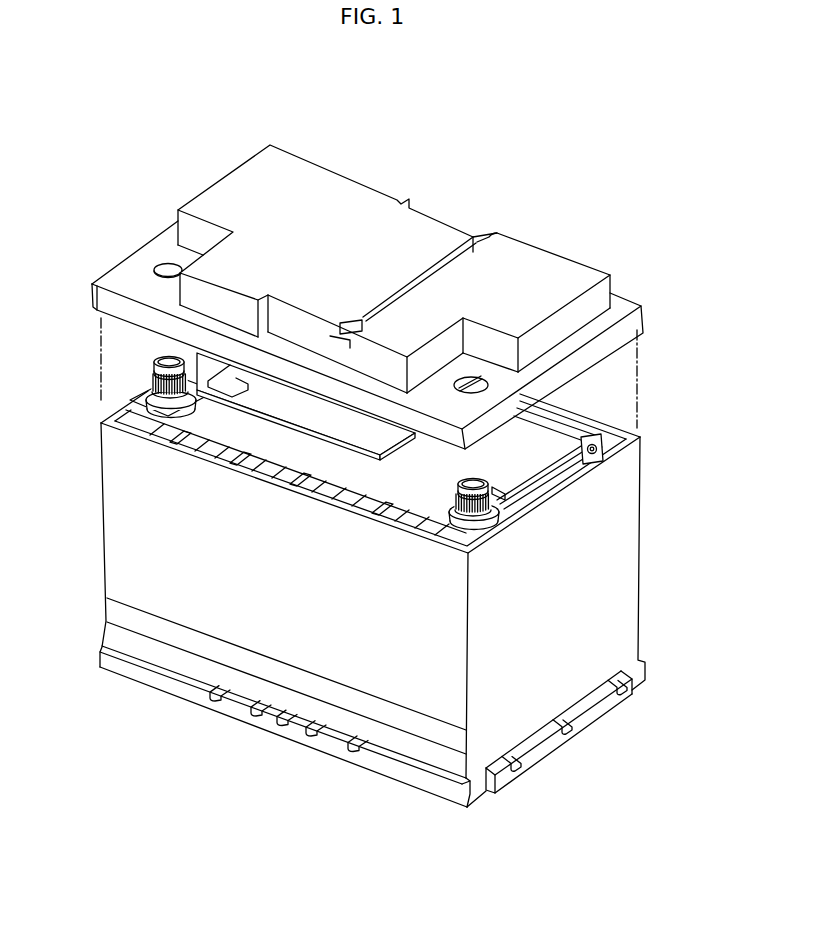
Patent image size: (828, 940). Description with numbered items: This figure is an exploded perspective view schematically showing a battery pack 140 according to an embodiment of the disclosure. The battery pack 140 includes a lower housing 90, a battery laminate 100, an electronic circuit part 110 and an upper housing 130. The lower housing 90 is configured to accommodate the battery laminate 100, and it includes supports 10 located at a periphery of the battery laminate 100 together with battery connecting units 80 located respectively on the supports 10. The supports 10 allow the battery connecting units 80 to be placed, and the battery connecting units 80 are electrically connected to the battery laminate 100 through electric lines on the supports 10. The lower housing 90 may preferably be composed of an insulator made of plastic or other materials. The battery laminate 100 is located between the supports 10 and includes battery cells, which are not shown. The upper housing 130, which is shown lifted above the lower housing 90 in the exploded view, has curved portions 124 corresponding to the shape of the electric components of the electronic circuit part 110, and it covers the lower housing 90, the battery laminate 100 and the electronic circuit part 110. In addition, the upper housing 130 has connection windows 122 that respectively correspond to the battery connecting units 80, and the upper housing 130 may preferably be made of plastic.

The battery pack 140 is at (221, 87).
The supports 10 is at (128, 420).
The upper housing 130 is at (626, 301).
The curved portions 124 is at (302, 174).
The connection windows 122 is at (152, 273).
The electronic circuit part 110 is at (385, 438).
The battery laminate 100 is at (547, 443).
The battery connecting units 80 is at (473, 483).
The lower housing 90 is at (193, 695).